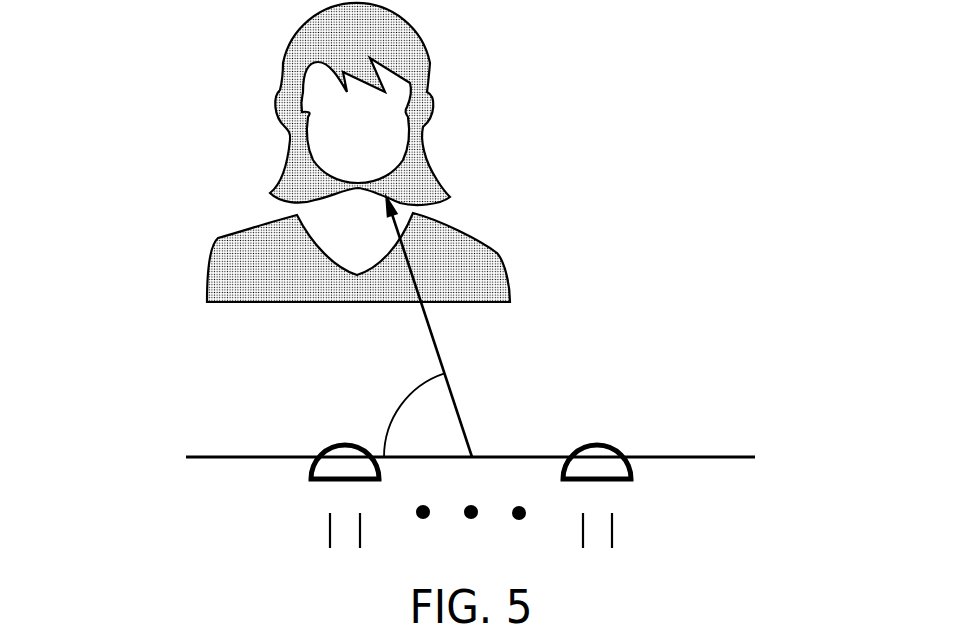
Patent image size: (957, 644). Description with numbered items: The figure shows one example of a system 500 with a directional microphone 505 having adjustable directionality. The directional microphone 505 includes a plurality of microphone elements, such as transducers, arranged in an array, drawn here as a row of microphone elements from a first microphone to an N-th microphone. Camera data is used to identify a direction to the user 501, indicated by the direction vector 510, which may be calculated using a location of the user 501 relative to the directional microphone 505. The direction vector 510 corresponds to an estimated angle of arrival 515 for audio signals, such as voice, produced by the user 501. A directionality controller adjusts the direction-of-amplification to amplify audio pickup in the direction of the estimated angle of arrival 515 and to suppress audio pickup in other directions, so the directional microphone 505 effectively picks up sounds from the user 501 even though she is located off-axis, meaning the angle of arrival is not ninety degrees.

The system 500 is at (538, 60).
The user 501 is at (308, 175).
The directional microphone 505 is at (170, 563).
The direction vector 510 is at (417, 278).
The angle of arrival 515 is at (395, 408).